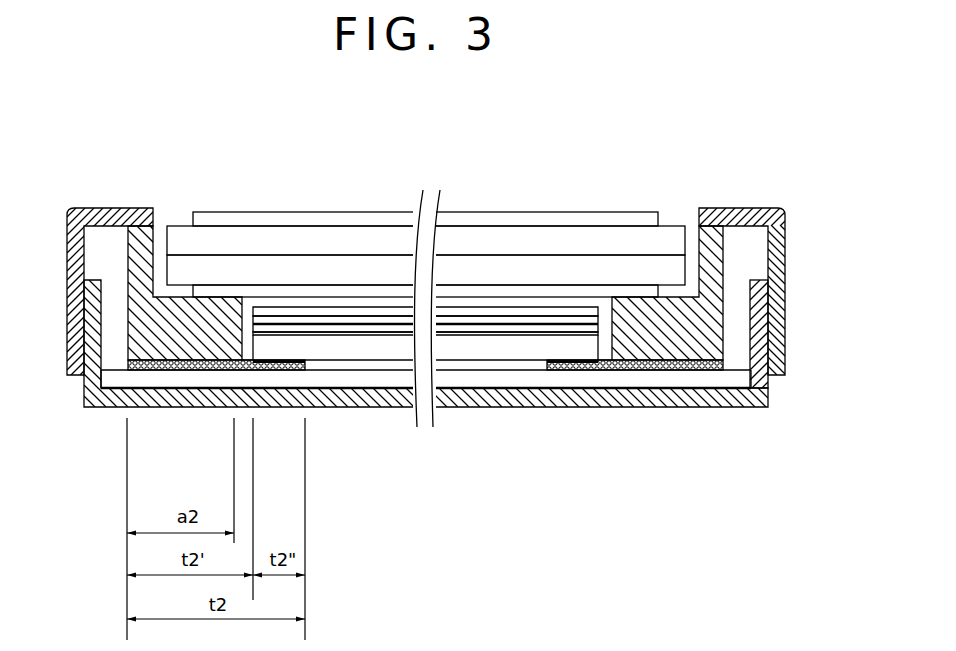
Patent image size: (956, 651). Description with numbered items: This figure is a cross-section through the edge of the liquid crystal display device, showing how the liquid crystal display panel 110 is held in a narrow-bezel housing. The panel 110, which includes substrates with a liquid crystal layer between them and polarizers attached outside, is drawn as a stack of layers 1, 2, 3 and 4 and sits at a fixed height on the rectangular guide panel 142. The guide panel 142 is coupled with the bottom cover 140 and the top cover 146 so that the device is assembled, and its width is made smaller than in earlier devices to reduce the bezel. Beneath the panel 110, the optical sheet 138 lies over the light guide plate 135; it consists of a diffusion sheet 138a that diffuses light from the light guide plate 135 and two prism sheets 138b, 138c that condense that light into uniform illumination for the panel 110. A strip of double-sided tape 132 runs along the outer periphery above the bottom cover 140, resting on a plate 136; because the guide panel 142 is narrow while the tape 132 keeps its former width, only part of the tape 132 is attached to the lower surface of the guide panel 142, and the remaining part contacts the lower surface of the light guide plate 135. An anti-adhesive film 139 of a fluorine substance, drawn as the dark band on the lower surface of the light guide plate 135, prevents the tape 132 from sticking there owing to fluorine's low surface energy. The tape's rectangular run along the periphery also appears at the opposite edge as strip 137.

The liquid crystal display panel 110 is at (426, 200).
The first panel layer 1 is at (528, 238).
The second panel layer 2 is at (567, 272).
The upper panel layer 3 is at (600, 220).
The lower panel layer 4 is at (633, 292).
The double-sided tape 132 is at (203, 368).
The light guide plate 135 is at (487, 353).
The support plate 136 is at (543, 380).
The second adhesive member 137 is at (612, 365).
The optical sheet 138 is at (416, 233).
The diffusion sheet 138a is at (332, 331).
The prism sheet 138b is at (304, 322).
The prism sheet 138c is at (279, 312).
The anti-adhesive film 139 is at (303, 362).
The bottom cover 140 is at (333, 393).
The guide panel 142 is at (117, 390).
The top cover 146 is at (103, 218).